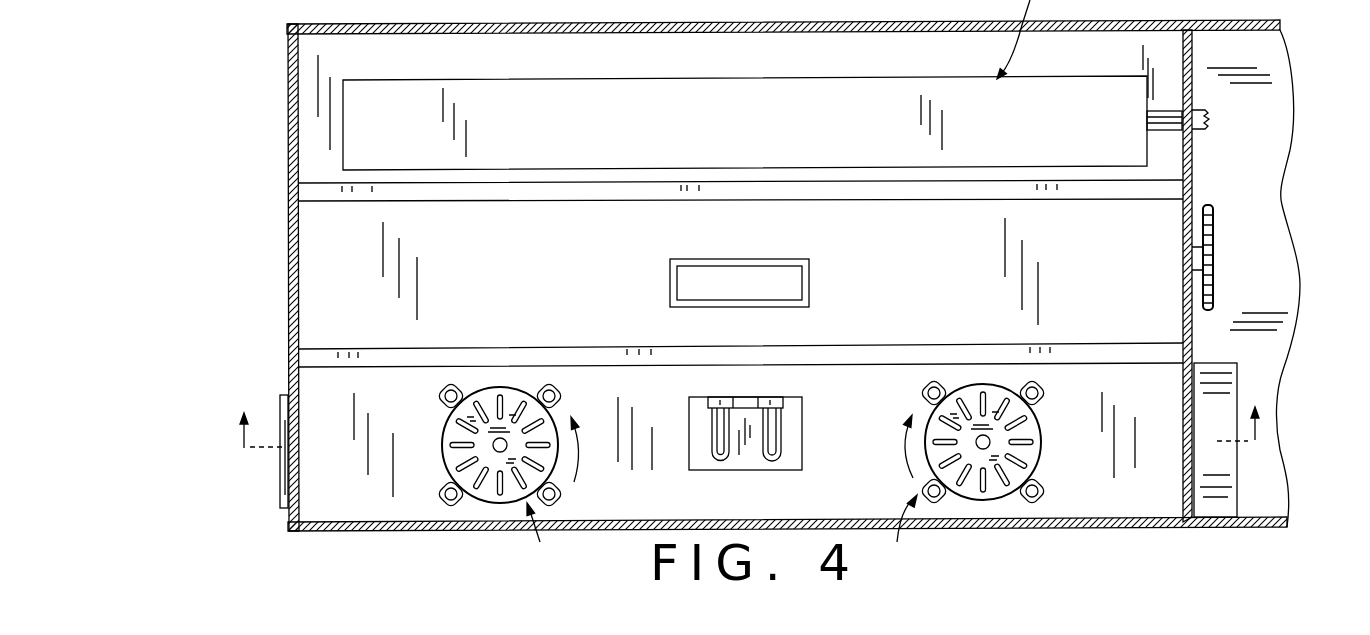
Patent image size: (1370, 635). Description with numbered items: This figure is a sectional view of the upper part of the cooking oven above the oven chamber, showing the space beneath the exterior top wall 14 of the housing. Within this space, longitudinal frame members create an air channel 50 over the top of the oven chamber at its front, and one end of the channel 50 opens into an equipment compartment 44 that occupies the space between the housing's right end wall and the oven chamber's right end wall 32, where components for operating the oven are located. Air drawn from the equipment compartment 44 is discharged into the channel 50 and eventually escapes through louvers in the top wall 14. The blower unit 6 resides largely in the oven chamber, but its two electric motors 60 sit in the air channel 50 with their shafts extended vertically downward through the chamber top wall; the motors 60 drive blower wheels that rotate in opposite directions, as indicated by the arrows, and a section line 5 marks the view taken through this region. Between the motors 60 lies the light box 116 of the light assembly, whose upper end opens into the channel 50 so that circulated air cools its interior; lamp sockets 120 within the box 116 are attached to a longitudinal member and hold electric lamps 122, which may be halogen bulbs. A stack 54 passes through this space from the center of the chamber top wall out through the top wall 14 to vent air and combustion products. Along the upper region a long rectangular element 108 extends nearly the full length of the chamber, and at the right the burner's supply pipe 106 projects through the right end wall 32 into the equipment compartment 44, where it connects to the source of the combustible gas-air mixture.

The top wall 14 is at (291, 257).
The right end wall 32 is at (1193, 327).
The equipment compartment 44 is at (1258, 246).
The air channel 50 is at (1146, 485).
The stack 54 is at (810, 285).
The electric motor 60 is at (441, 452).
The supply pipe 106 is at (1202, 132).
The battery pack 108 is at (533, 112).
The light box 116 is at (790, 458).
The lamp sockets 120 is at (773, 402).
The electric lamps 122 is at (770, 429).
The section line 5- 5 is at (752, 415).
The blower unit 6 is at (722, 533).